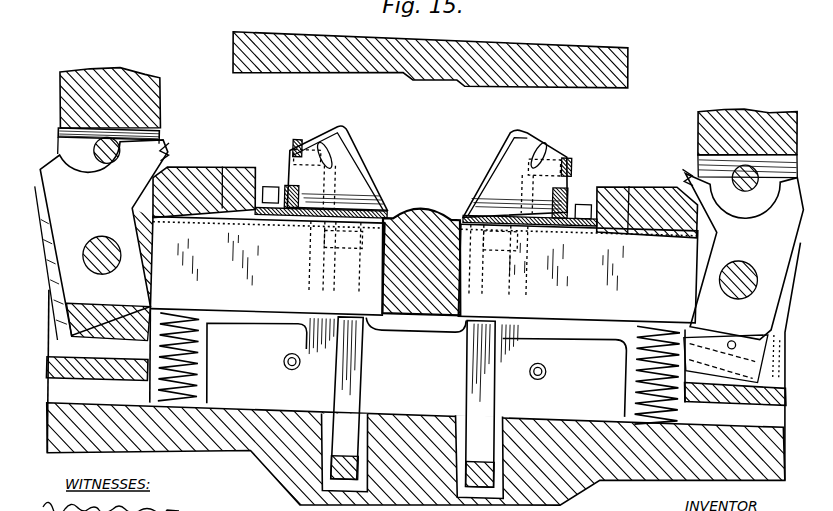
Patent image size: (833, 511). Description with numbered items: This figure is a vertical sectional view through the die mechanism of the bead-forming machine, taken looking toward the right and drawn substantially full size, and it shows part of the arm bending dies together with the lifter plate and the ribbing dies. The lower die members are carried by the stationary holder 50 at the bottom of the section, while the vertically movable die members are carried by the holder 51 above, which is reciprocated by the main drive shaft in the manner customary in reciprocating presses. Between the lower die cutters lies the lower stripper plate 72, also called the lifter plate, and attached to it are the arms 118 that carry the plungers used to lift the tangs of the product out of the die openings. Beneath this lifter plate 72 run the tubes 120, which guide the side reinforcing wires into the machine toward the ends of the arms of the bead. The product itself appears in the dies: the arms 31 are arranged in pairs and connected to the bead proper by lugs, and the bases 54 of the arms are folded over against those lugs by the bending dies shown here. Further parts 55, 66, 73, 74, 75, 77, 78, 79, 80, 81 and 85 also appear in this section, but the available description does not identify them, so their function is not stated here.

The arms 31 is at (338, 149).
The stationary holder 50 is at (416, 255).
The vertically movable holder 51 is at (96, 88).
The bases of the arms 54 is at (374, 213).
The center block 55 is at (421, 233).
The bar 66 is at (478, 78).
The lower stripper plate 72 is at (423, 270).
The spring 73 is at (202, 374).
The clamping block 74 is at (205, 174).
The pin 75 is at (289, 146).
The pawl 77 is at (416, 255).
The pivot pin 78 is at (91, 256).
The shoe 79 is at (142, 318).
The side wall 80 is at (57, 298).
The clip 81 is at (164, 152).
The holder plate 85 is at (322, 241).
The arms 118 is at (471, 403).
The tubes 120 is at (290, 371).